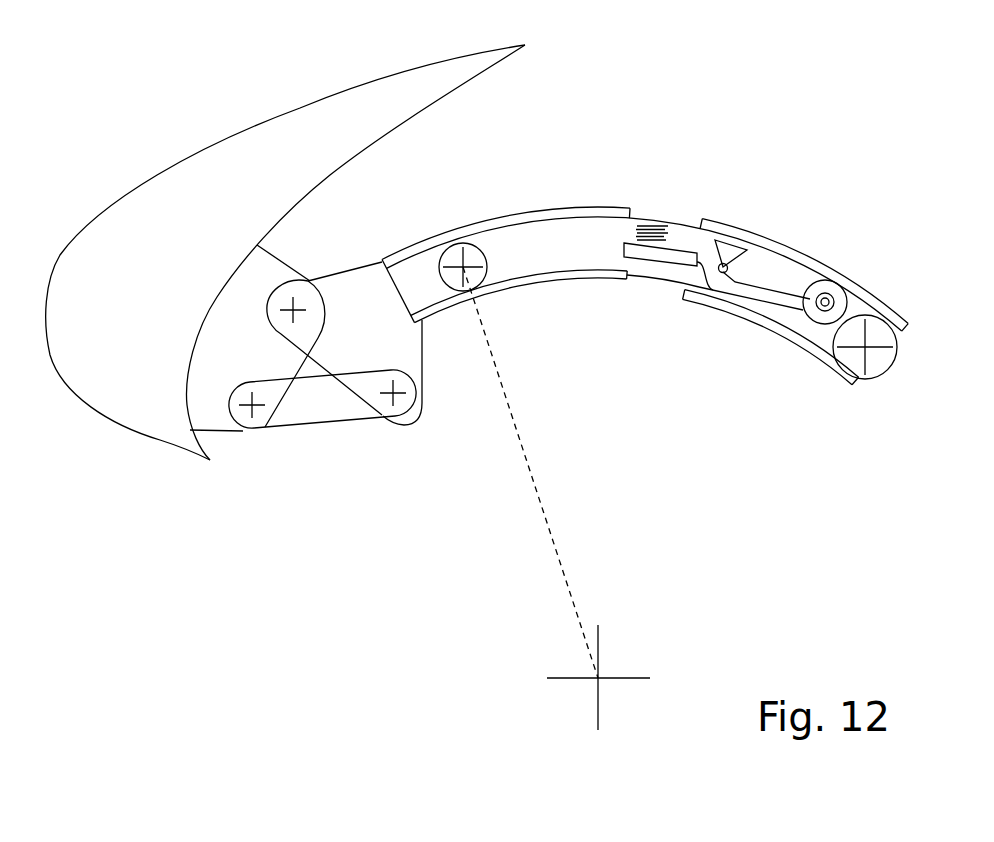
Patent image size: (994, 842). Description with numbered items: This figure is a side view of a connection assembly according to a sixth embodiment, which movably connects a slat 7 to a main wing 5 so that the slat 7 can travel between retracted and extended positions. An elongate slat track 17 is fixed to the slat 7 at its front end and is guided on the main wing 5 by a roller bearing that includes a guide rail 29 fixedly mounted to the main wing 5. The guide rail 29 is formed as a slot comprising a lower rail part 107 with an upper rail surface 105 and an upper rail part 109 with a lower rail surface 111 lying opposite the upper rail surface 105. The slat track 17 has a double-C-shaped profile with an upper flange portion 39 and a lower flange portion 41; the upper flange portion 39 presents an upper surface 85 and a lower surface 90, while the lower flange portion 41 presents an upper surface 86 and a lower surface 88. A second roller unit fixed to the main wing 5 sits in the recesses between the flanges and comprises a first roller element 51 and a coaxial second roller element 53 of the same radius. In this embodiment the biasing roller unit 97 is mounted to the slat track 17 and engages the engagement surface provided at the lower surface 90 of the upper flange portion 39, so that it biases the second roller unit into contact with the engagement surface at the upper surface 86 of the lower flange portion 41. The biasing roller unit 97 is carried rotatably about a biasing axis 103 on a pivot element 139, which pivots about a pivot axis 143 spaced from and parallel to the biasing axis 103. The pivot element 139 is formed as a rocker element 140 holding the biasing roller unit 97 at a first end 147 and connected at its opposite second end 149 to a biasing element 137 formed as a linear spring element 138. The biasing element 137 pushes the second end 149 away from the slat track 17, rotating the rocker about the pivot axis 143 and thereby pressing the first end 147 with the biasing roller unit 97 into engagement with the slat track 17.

The main wing 5 is at (606, 434).
The slat 7 is at (140, 318).
The slat track 17 is at (656, 389).
The guide rail 29 is at (862, 327).
The upper flange portion 39 is at (423, 248).
The lower flange portion 41 is at (438, 307).
The first roller element 51 is at (880, 333).
The second roller element 53 is at (473, 252).
The upper surface 85 is at (617, 207).
The upper surface 86 is at (530, 275).
The lower surface 88 is at (637, 275).
The lower surface 90 is at (503, 230).
The biasing roller unit 97 is at (833, 288).
The biasing axis 103 is at (827, 297).
The upper rail surface 105 is at (765, 308).
The lower rail part 107 is at (815, 357).
The upper rail part 109 is at (862, 297).
The lower rail surface 111 is at (777, 262).
The biasing element 137 is at (681, 181).
The linear spring element 138 is at (665, 230).
The pivot element 139 is at (764, 177).
The rocker element 140 is at (700, 255).
The pivot axis 143 is at (712, 272).
The first end 147 is at (805, 308).
The second end 149 is at (654, 250).